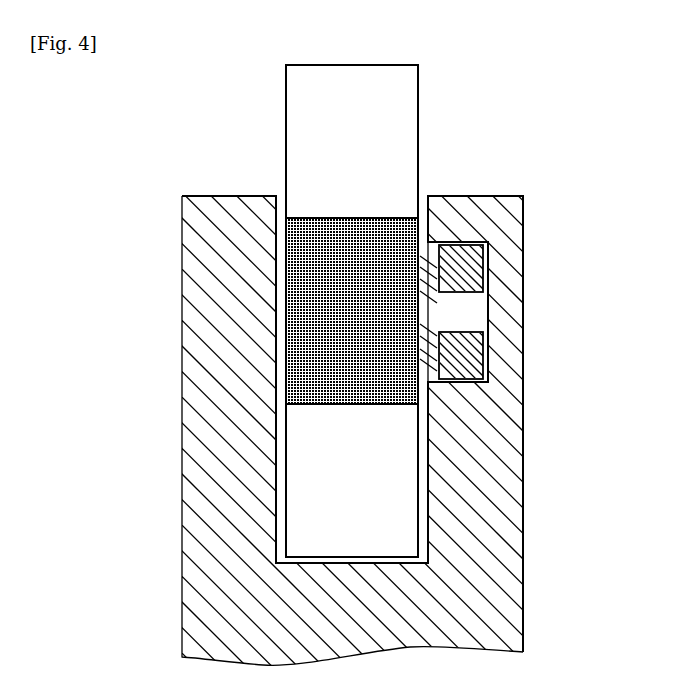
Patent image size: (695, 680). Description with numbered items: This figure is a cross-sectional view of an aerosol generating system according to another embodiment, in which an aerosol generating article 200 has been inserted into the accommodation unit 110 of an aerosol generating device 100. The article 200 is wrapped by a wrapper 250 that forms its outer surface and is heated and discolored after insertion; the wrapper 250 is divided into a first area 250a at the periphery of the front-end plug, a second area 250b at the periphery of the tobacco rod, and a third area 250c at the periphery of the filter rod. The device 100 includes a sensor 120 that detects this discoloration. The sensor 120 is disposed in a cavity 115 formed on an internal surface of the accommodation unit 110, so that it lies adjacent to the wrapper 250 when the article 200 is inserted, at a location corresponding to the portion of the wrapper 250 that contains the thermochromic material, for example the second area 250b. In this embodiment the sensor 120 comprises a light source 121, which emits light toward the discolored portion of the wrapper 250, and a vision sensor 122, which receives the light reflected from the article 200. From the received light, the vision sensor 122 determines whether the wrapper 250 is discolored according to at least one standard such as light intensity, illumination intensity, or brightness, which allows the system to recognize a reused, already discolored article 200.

The aerosol generating device 100 is at (550, 450).
The accommodation unit 110 is at (430, 428).
The cavity 115 is at (460, 373).
The sensor 120 is at (537, 307).
The light source 121 is at (477, 269).
The vision sensor 122 is at (504, 350).
The aerosol generating article 200 is at (434, 106).
The wrapper 250 is at (223, 311).
The first area 250a is at (260, 479).
The second area 250b is at (290, 308).
The third area 250c is at (307, 153).